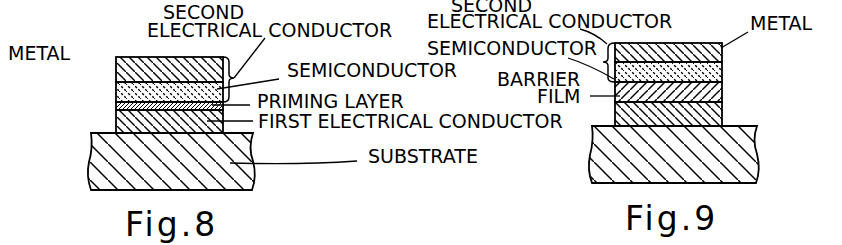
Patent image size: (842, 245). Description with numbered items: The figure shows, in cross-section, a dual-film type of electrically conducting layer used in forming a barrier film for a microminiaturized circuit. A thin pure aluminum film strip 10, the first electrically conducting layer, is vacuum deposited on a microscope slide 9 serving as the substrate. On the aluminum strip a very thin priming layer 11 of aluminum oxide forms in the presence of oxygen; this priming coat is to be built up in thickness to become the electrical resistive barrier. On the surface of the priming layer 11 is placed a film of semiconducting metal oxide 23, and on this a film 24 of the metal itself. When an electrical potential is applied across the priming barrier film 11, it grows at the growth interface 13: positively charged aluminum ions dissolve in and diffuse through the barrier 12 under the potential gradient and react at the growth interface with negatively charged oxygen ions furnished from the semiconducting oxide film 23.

In FIG. 8, the microscope slide 9 is at (104, 159).
In FIG. 9, the microscope slide 9 is at (744, 149).
In FIG. 8, the aluminum film strip 10 is at (129, 121).
In FIG. 9, the aluminum film strip 10 is at (712, 113).
In FIG. 8, the priming layer 11 is at (126, 108).
In FIG. 8, the growth interface 13 is at (122, 105).
In FIG. 8, the semiconducting metal oxide film 23 is at (128, 90).
In FIG. 9, the semiconducting metal oxide film 23 is at (708, 70).
In FIG. 8, the metal film 24 is at (129, 67).
In FIG. 9, the metal film 24 is at (723, 47).
In FIG. 9, the barrier film 12 is at (723, 88).